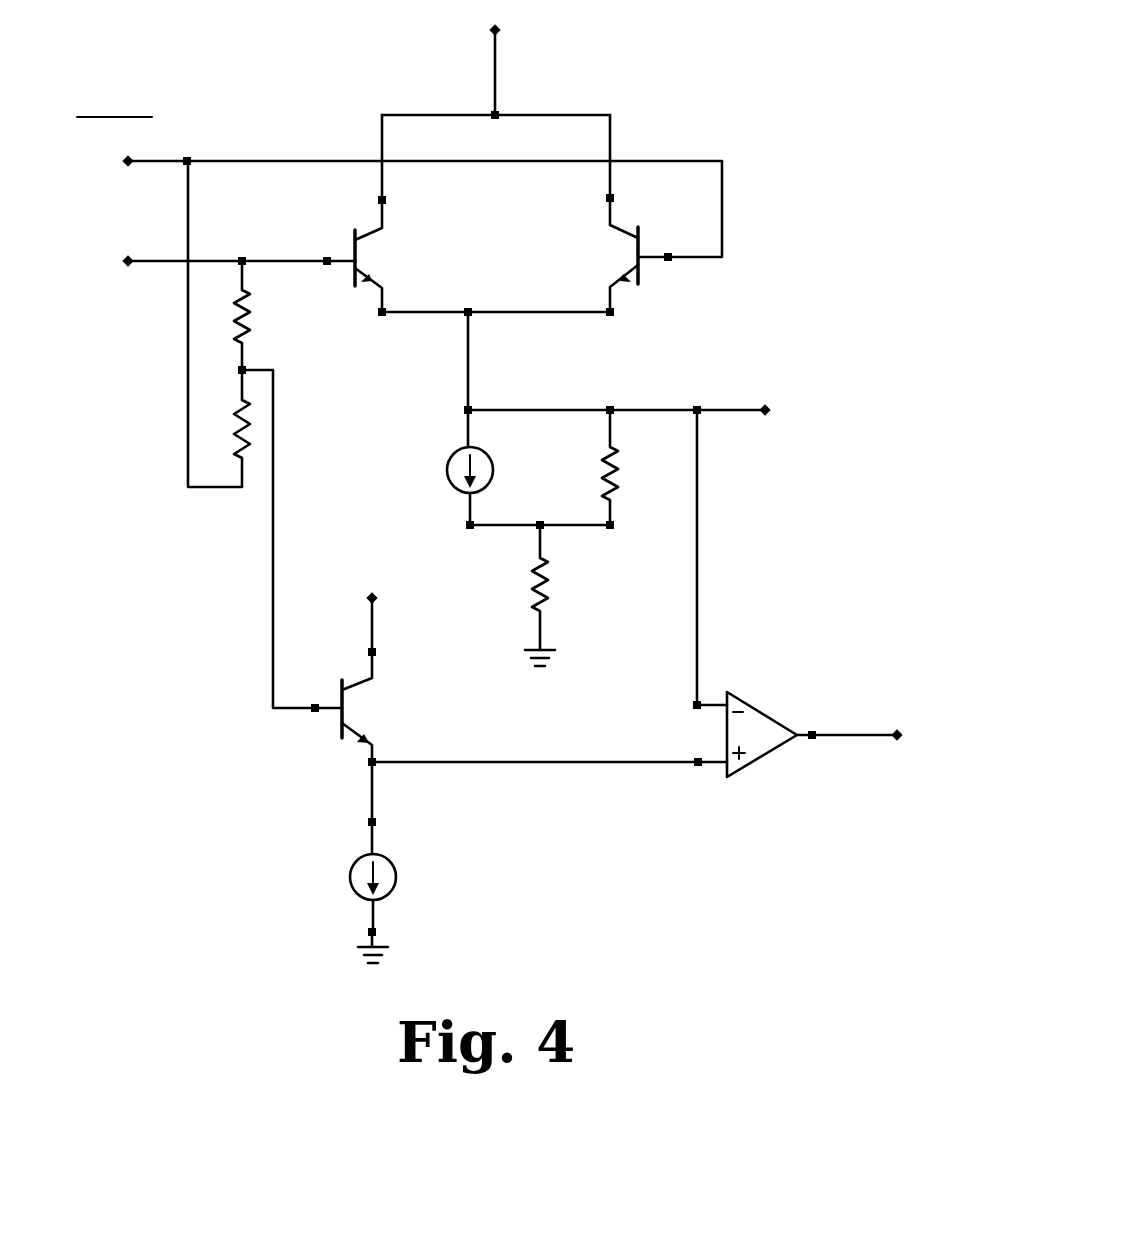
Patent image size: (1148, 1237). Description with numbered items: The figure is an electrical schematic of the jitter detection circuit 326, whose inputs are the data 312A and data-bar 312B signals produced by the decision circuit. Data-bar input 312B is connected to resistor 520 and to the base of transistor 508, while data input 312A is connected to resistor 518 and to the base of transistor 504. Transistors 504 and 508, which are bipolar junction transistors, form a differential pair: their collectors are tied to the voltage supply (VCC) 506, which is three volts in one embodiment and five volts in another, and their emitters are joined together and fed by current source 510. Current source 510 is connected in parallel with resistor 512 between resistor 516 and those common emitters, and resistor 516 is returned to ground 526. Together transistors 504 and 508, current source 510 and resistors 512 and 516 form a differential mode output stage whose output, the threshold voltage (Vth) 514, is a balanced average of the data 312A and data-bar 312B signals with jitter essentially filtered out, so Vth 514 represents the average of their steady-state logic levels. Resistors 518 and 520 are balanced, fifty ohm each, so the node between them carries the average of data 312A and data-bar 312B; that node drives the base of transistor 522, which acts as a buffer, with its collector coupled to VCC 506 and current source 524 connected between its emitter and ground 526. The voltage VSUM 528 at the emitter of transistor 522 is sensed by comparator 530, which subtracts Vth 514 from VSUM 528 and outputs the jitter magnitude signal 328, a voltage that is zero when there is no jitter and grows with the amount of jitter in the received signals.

The jitter detection circuit 326 is at (238, 78).
The data-bar input 312B is at (242, 158).
The data input 312A is at (217, 258).
The transistor 504 is at (352, 237).
The transistor 508 is at (642, 268).
The voltage supply (VCC) 506 is at (497, 72).
The current source 510 is at (447, 462).
The resistor 512 is at (607, 470).
The threshold voltage (Vth) 514 is at (722, 408).
The resistor 516 is at (548, 590).
The resistor 518 is at (250, 322).
The resistor 520 is at (253, 422).
The transistor 522 is at (338, 688).
The current source 524 is at (397, 875).
The ground 526 is at (548, 648).
The VSUM 528 is at (502, 761).
The comparator 530 is at (753, 705).
The jitter magnitude signal 328 is at (832, 732).